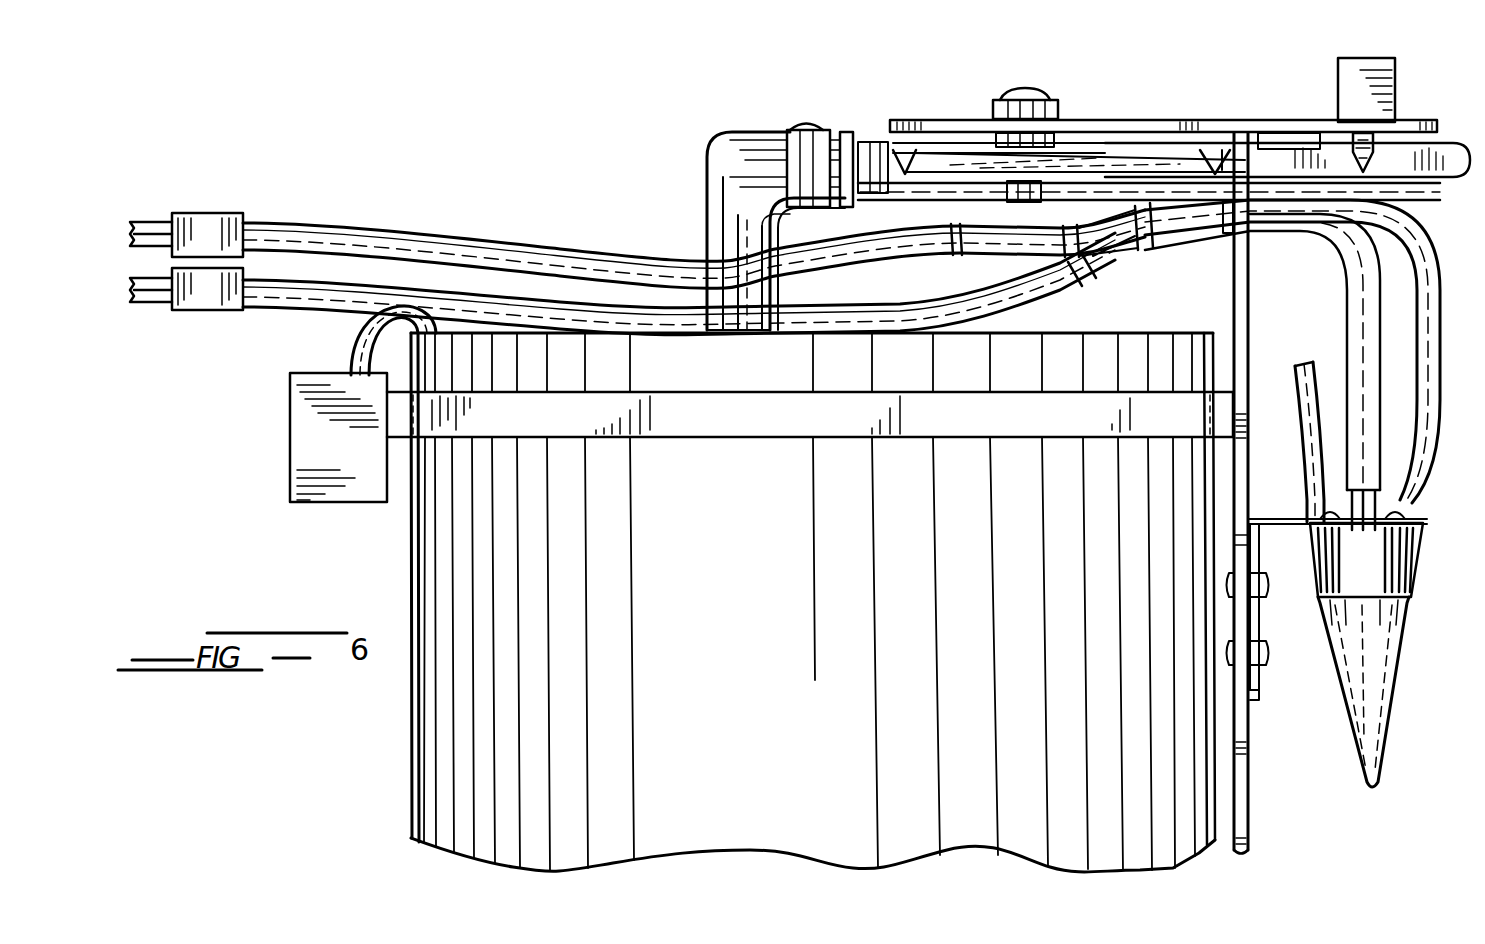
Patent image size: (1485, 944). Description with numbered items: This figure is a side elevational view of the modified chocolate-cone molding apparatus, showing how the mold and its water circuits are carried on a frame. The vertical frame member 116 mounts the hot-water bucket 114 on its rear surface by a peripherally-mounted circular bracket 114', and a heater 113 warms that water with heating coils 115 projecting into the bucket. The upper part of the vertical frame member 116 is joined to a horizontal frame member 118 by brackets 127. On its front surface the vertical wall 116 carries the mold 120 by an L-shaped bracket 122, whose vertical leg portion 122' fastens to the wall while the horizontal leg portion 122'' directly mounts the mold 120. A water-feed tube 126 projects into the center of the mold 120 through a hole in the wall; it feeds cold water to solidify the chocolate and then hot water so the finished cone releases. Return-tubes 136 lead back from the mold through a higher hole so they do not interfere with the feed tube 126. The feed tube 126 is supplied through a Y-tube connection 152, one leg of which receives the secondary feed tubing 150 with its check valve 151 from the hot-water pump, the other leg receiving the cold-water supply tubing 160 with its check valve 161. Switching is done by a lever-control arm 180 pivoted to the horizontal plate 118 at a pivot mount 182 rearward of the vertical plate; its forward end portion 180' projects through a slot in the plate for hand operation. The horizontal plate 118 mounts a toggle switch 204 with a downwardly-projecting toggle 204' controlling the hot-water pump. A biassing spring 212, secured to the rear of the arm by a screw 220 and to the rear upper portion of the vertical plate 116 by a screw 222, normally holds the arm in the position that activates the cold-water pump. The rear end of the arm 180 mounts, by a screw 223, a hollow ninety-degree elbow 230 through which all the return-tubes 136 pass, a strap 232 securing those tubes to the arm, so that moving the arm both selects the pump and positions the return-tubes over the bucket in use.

The heater 113 is at (296, 421).
The hot-water bucket 114 is at (813, 602).
The circular bracket 114' is at (810, 432).
The heating coils 115 is at (352, 344).
The vertical frame member 116 is at (1248, 332).
The horizontal frame member 118 is at (1140, 120).
The mold 120 is at (1388, 763).
The L-shaped bracket 122 is at (1272, 614).
The vertical leg portion 122' is at (1279, 653).
The horizontal leg portion 122'' is at (1337, 500).
The water-feed tube 126 is at (1400, 327).
The brackets 127 is at (1268, 133).
The return-tubes 136 is at (1295, 420).
The secondary feed tubing 150 is at (1012, 295).
The check valve 151 is at (232, 303).
The Y-tube connection 152 is at (1132, 250).
The supply tubing 160 is at (956, 228).
The check valve 161 is at (205, 224).
The lever-control arm 180 is at (1164, 185).
The forward end portion 180' is at (1175, 120).
The pivot mount 182 is at (1056, 114).
The toggle switch 204 is at (1391, 90).
The toggle 204' is at (1385, 167).
The biassing spring 212 is at (912, 148).
The screw 220 is at (878, 138).
The screw 222 is at (1252, 133).
The screw 223 is at (814, 120).
The elbow 230 is at (727, 138).
The strap 232 is at (868, 205).